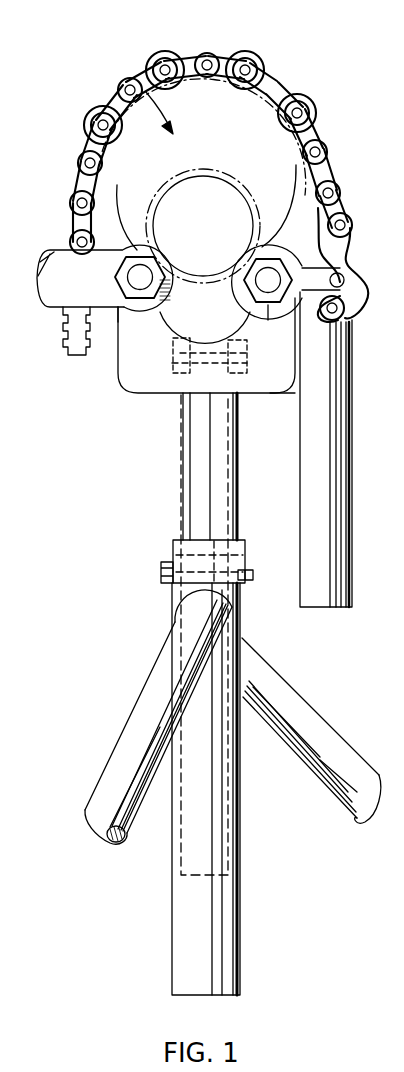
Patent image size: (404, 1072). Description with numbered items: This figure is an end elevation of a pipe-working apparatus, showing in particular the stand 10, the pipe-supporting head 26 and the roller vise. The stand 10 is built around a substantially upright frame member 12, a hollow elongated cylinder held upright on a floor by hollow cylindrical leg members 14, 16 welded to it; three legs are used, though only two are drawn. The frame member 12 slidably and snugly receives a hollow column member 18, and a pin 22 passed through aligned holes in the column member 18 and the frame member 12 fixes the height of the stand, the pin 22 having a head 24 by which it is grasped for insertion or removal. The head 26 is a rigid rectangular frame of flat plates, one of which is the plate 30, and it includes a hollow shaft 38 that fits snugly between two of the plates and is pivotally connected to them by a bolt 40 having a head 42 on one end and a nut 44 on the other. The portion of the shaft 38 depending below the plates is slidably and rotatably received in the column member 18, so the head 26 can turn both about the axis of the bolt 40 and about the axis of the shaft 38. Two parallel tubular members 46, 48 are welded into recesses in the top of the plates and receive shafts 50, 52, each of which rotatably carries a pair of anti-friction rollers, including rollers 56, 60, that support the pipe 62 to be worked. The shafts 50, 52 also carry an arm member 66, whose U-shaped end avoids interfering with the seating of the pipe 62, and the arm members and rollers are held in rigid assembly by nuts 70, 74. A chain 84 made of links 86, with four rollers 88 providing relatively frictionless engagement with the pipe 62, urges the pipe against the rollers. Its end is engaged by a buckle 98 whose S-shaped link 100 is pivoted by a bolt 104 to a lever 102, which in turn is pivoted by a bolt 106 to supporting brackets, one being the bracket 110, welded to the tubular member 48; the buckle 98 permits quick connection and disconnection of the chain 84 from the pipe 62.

The stand 10 is at (167, 623).
The frame member 12 is at (225, 927).
The leg member 14 is at (300, 724).
The leg member 16 is at (152, 662).
The column member 18 is at (181, 489).
The pin 22 is at (250, 577).
The head 24 is at (166, 562).
The pipe-supporting head 26 is at (163, 394).
The opposed member 30 is at (262, 396).
The shaft 38 is at (233, 486).
The bolt 40 is at (200, 365).
The head 42 is at (170, 361).
The nut 44 is at (262, 400).
The tubular member 46 is at (140, 314).
The tubular member 48 is at (272, 316).
The shaft 50 is at (140, 278).
The shaft 52 is at (252, 289).
The roller 56 is at (280, 245).
The roller 60 is at (128, 243).
The pipe 62 is at (198, 132).
The arm member 66 is at (68, 262).
The nut 70 is at (130, 293).
The nut 74 is at (260, 302).
The chain 84 is at (204, 52).
The link 86 is at (70, 179).
The roller 88 is at (165, 50).
The buckle 98 is at (358, 243).
The S-shaped link 100 is at (355, 262).
The lever 102 is at (338, 497).
The bolt 104 is at (344, 318).
The bolt 106 is at (345, 280).
The supporting bracket 110 is at (319, 282).